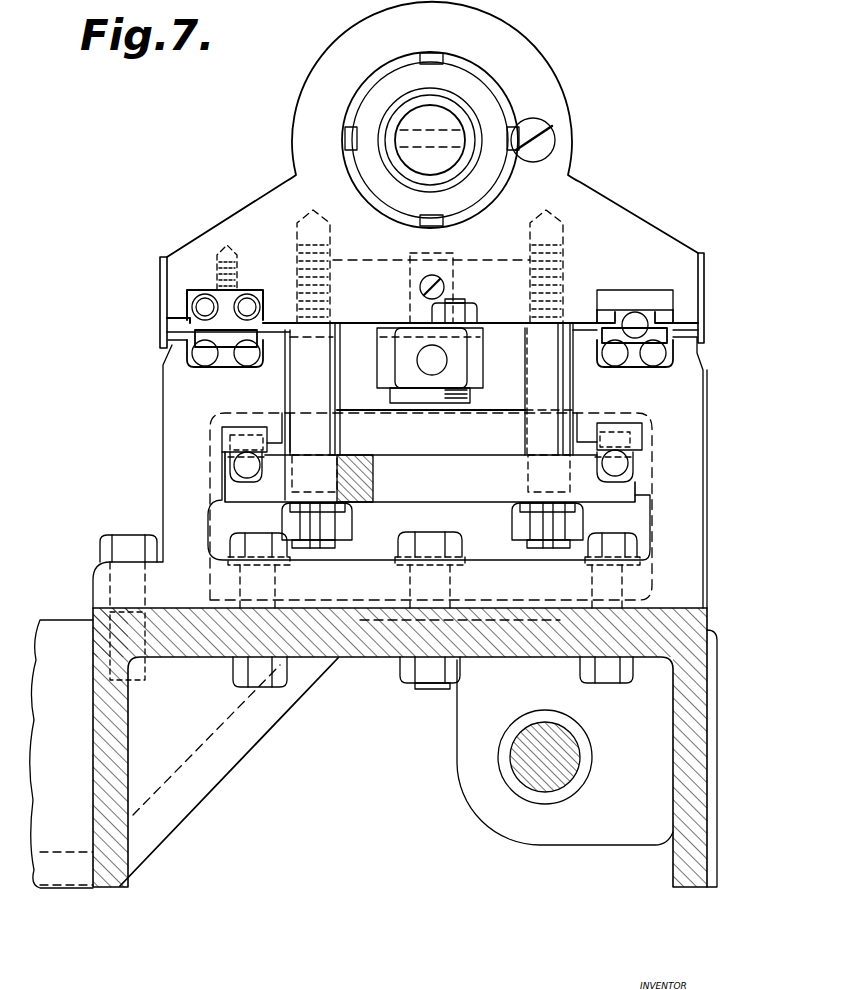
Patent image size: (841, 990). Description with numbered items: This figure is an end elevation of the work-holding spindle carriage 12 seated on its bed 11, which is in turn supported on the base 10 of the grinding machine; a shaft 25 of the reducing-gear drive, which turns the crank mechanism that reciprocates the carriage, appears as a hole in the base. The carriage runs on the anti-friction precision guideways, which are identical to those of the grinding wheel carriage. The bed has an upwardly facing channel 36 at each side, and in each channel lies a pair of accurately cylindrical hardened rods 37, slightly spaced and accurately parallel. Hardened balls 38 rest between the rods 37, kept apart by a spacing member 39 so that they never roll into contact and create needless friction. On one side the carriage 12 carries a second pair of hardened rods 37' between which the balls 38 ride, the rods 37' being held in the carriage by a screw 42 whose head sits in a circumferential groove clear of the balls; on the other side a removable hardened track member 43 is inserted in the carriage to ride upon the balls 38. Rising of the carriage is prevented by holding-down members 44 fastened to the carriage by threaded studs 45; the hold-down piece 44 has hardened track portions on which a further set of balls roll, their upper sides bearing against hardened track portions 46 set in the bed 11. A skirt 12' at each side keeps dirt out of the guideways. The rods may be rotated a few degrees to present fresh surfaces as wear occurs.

The base 10 is at (668, 834).
The bed 11 is at (695, 490).
The work-holding spindle carriage 12 is at (432, 251).
The skirt 12' is at (430, 300).
The shaft 25 is at (556, 742).
The channel 36 is at (222, 366).
The hardened rods 37 is at (430, 378).
The hardened rods 37' is at (237, 280).
The hardened balls 38 is at (190, 318).
The spacing member 39 is at (167, 332).
The screw 42 is at (230, 258).
The hardened track member 43 is at (628, 293).
The holding-down member 44 is at (430, 466).
The threaded studs 45 is at (330, 302).
The hardened track portions 46 is at (627, 442).